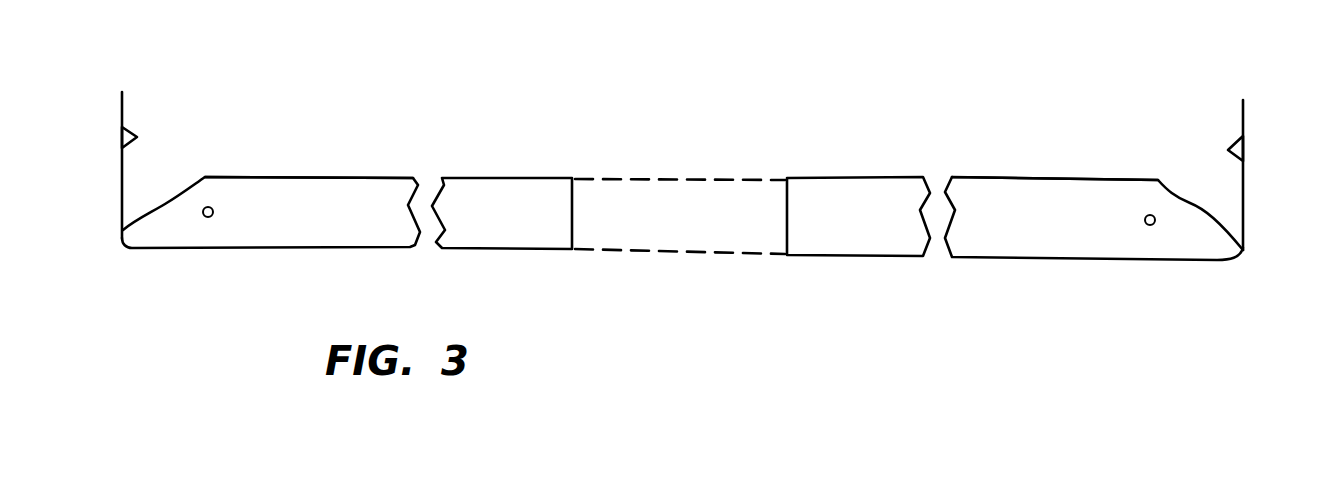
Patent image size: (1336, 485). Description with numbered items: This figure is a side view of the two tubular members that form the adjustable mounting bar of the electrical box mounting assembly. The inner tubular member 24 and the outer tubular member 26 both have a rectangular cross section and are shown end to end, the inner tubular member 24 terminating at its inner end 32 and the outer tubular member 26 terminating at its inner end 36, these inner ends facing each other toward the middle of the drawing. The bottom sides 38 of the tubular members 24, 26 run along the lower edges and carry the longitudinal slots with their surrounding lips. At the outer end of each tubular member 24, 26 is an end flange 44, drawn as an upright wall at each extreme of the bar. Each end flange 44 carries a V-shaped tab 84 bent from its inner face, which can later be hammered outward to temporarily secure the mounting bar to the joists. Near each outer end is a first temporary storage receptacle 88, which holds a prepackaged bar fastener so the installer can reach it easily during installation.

The inner tubular member 24 is at (363, 229).
The outer tubular member 26 is at (1079, 239).
The inner end 32 is at (573, 213).
The inner end 36 is at (787, 214).
The bottom side 38 is at (327, 177).
The end flange 44 is at (122, 110).
The V-shaped tab 84 is at (137, 137).
The first temporary storage receptacle 88 is at (204, 217).